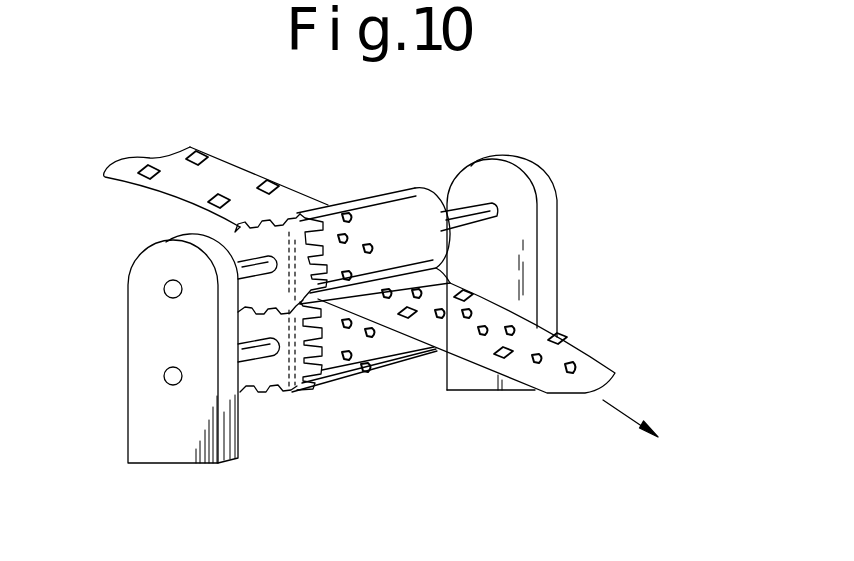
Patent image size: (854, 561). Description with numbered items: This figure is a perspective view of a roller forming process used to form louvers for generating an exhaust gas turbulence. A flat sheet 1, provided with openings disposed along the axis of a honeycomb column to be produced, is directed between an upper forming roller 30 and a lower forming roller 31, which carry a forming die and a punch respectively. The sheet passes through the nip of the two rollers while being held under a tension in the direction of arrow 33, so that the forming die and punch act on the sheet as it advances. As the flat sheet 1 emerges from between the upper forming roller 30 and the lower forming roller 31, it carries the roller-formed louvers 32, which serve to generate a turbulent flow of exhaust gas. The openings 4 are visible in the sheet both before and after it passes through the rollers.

The flat sheet 1 is at (247, 171).
The punched holes 4 is at (148, 177).
The upper forming roller 30 is at (407, 189).
The lower forming roller 31 is at (389, 364).
The louvers 32 is at (570, 370).
The arrow 33 is at (626, 413).